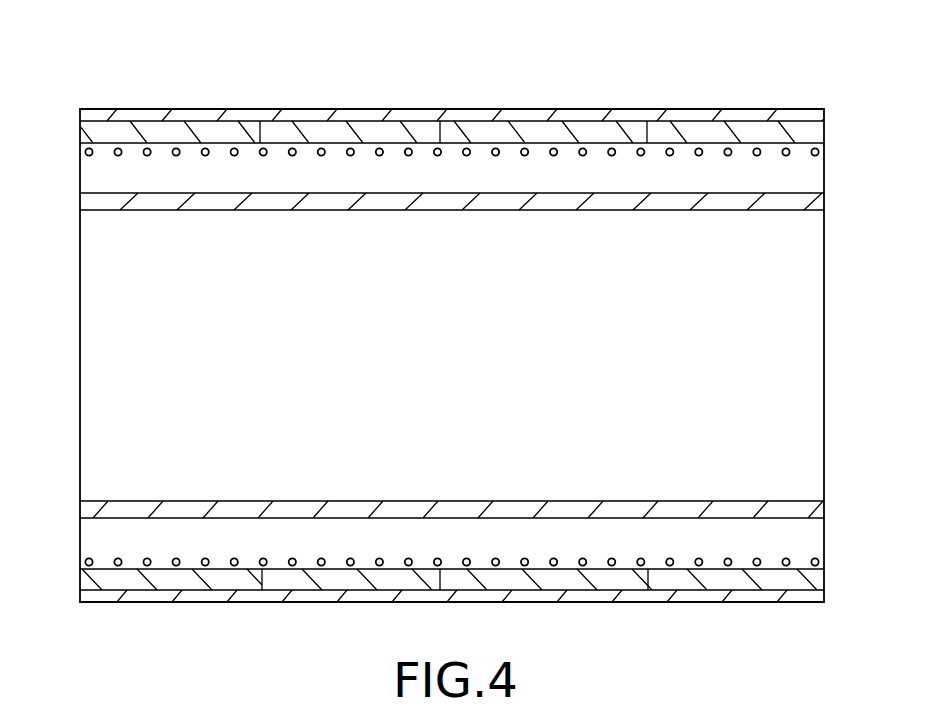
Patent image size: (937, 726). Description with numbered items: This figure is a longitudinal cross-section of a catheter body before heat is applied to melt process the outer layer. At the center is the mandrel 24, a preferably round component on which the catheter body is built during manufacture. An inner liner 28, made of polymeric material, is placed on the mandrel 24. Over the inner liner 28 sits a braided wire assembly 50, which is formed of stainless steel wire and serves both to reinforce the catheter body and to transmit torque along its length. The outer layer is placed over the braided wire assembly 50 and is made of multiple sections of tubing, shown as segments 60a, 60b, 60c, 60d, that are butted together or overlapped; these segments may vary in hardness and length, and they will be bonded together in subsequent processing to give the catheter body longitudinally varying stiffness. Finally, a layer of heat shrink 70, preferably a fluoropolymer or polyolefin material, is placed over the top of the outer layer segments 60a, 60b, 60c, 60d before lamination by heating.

The mandrel 24 is at (510, 373).
The inner liner 28 is at (825, 203).
The braided wire assembly 50 is at (177, 156).
The segment of outer layer 60a is at (125, 578).
The segment of outer layer 60b is at (300, 580).
The segment of outer layer 60c is at (548, 137).
The segment of outer layer 60d is at (749, 137).
The heat shrink 70 is at (300, 115).